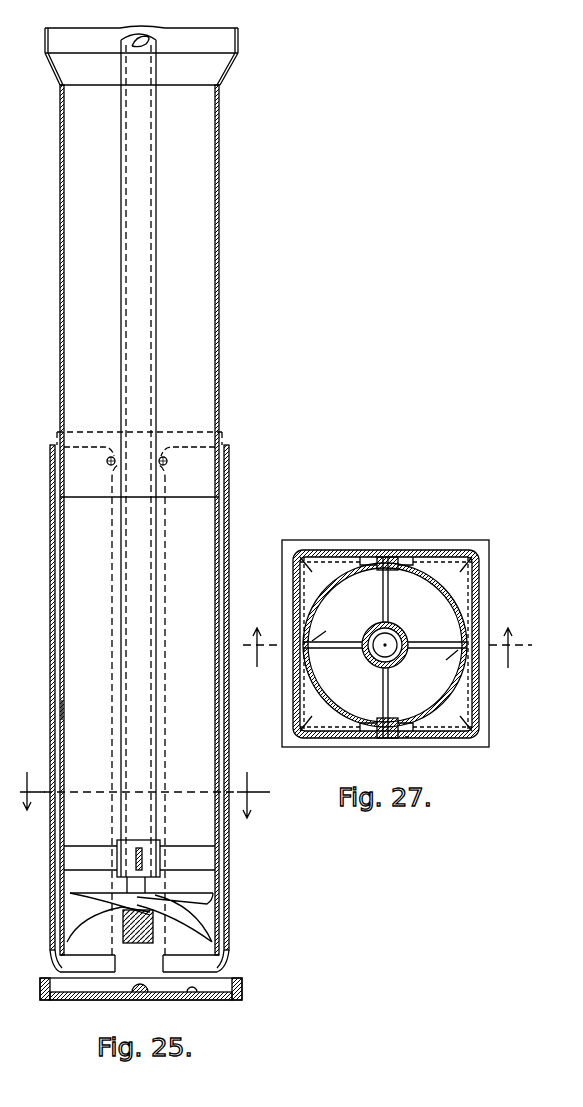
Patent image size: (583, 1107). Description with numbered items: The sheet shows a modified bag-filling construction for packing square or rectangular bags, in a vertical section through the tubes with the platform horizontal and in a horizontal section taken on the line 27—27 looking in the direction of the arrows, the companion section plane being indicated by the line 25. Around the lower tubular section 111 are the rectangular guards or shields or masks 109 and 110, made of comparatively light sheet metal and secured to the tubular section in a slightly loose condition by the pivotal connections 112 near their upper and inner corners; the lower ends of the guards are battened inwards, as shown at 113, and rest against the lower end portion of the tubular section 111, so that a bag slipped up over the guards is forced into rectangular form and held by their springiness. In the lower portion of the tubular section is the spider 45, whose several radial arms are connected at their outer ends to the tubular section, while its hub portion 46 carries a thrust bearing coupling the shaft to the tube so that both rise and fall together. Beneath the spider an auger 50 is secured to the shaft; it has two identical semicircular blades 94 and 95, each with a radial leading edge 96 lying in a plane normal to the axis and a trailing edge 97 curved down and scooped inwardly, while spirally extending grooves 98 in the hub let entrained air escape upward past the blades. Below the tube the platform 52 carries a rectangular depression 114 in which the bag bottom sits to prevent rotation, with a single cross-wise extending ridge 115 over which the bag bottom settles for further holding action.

In FIG. 27, the section line 25 is at (387, 655).
In FIG. 25, the section line 27- 27 is at (137, 796).
In FIG. 25, the spider 45 is at (200, 860).
In FIG. 27, the spider 45 is at (390, 608).
In FIG. 25, the hub portion 46 is at (160, 842).
In FIG. 27, the hub portion 46 is at (371, 662).
In FIG. 25, the auger 50 is at (170, 913).
In FIG. 27, the auger 50 is at (353, 662).
In FIG. 25, the platform 52 is at (88, 1010).
In FIG. 27, the platform 52 is at (371, 533).
In FIG. 25, the blade 94 is at (100, 890).
In FIG. 27, the blade 94 is at (416, 685).
In FIG. 25, the blade 95 is at (95, 918).
In FIG. 27, the blade 95 is at (372, 605).
In FIG. 25, the radial leading edge 96 is at (208, 890).
In FIG. 27, the radial leading edge 96 is at (449, 643).
In FIG. 27, the trailing edge 97 is at (314, 640).
In FIG. 25, the spirally extending grooves 98 is at (129, 945).
In FIG. 25, the rectangular guard 109 is at (50, 618).
In FIG. 27, the rectangular guard 109 is at (297, 600).
In FIG. 25, the rectangular guard 110 is at (229, 558).
In FIG. 27, the rectangular guard 110 is at (478, 579).
In FIG. 25, the lower tubular section 111 is at (63, 684).
In FIG. 27, the lower tubular section 111 is at (334, 710).
In FIG. 25, the pivotal connections 112 is at (103, 461).
In FIG. 25, the battened-in lower ends 113 is at (58, 969).
In FIG. 27, the battened-in lower ends 113 is at (305, 716).
In FIG. 25, the rectangular depression 114 is at (193, 993).
In FIG. 27, the rectangular depression 114 is at (407, 738).
In FIG. 25, the cross-wise extending ridge 115 is at (146, 993).
In FIG. 27, the cross-wise extending ridge 115 is at (389, 560).